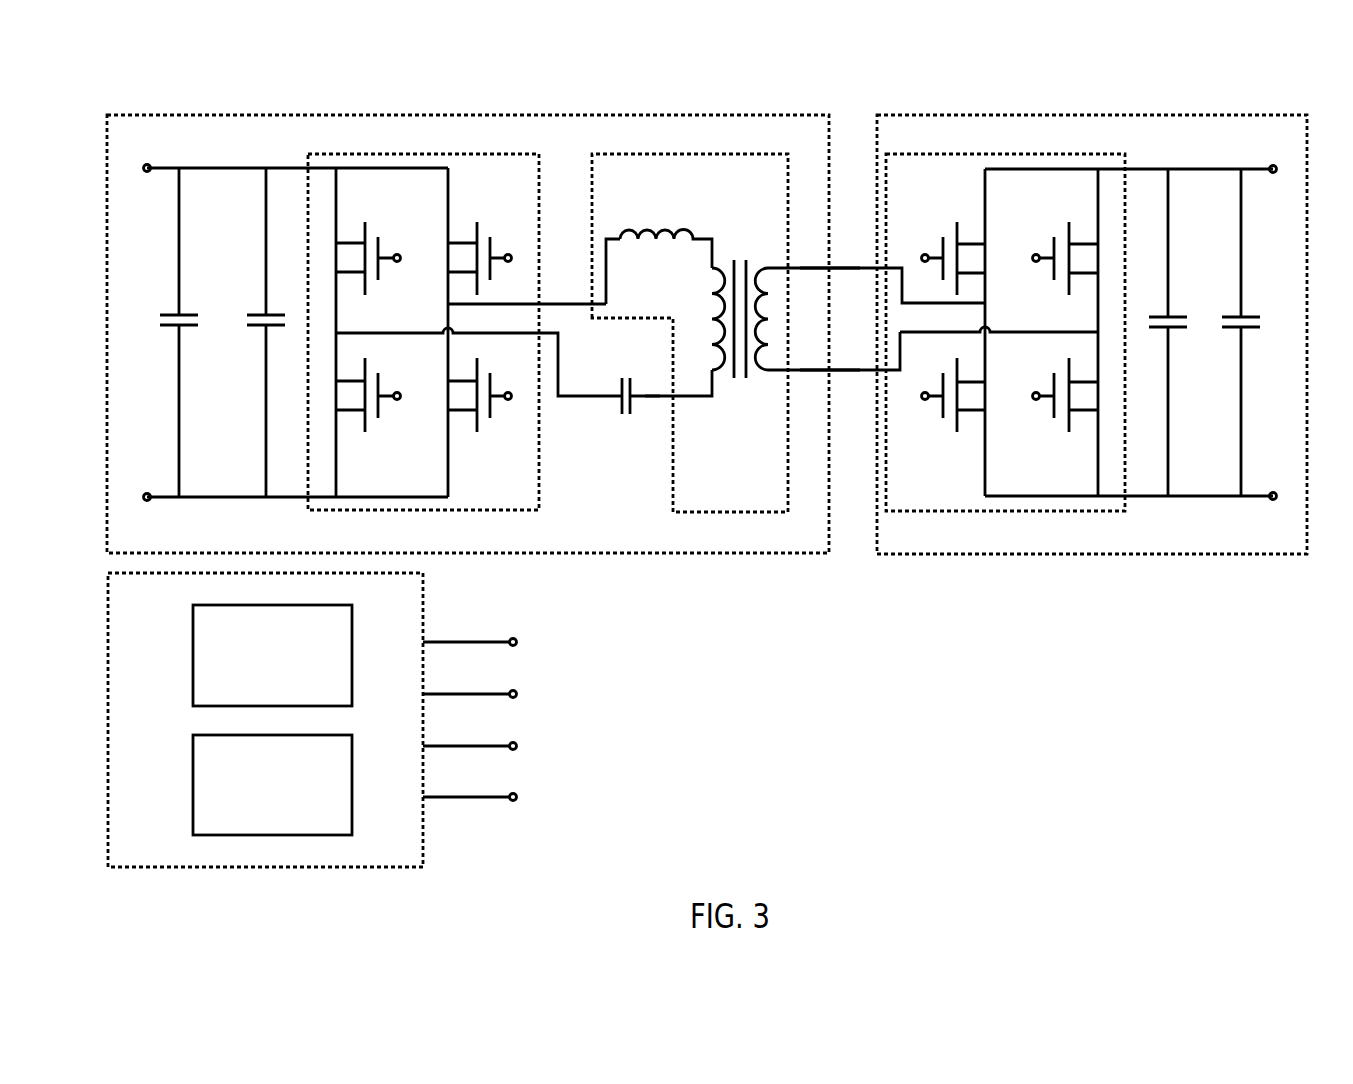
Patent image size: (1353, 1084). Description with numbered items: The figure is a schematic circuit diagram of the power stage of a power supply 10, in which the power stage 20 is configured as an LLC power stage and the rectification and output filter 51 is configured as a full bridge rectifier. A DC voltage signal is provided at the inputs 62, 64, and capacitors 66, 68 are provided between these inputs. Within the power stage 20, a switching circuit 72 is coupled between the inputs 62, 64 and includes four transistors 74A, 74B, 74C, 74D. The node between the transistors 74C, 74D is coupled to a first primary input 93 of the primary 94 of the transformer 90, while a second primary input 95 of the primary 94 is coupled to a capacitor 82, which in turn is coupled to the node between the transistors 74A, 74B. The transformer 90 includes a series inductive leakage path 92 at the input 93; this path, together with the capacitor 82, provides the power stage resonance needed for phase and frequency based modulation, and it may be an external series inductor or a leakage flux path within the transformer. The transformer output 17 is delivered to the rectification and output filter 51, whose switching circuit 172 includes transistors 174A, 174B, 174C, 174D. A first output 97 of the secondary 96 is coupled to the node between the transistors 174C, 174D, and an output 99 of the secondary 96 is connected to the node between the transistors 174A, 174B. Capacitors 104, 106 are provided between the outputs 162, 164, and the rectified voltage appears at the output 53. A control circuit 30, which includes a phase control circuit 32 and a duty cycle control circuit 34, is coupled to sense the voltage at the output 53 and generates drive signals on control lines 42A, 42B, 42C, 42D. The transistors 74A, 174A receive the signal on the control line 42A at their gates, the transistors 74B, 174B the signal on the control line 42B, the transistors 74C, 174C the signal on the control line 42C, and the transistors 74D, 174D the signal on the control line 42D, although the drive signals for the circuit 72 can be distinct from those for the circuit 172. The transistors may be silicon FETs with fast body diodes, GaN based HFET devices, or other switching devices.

The power supply 10 is at (969, 690).
The output 17 is at (854, 240).
The power stage 20 is at (143, 115).
The control circuit 30 is at (108, 600).
The phase control circuit 32 is at (193, 623).
The duty cycle control circuit 34 is at (193, 773).
The control line 42A is at (397, 254).
The control line 42B is at (397, 400).
The control line 42C is at (508, 254).
The control line 42D is at (508, 400).
The rectification and output filter 51 is at (881, 115).
The output 53 is at (1294, 147).
The input 62 is at (153, 173).
The input 64 is at (151, 493).
The capacitor 66 is at (176, 311).
The capacitor 68 is at (263, 311).
The switching circuit 72 is at (308, 510).
The transistor 74A is at (363, 229).
The transistor 74B is at (362, 427).
The transistor 74C is at (473, 229).
The transistor 74D is at (474, 427).
The capacitor 82 is at (621, 406).
The transformer 90 is at (673, 505).
The series inductive leakage path 92 is at (652, 228).
The first primary input 93 is at (573, 304).
The primary 94 is at (721, 390).
The second primary input 95 is at (657, 396).
The secondary 96 is at (759, 390).
The first output 97 is at (808, 268).
The output 99 is at (808, 370).
The capacitor 104 is at (1183, 316).
The capacitor 106 is at (1255, 316).
The output 162 is at (1266, 176).
The output 164 is at (1271, 492).
The switching circuit 172 is at (1125, 511).
The transistor 174A is at (1072, 230).
The transistor 174B is at (1071, 426).
The transistor 174C is at (961, 230).
The transistor 174D is at (960, 426).